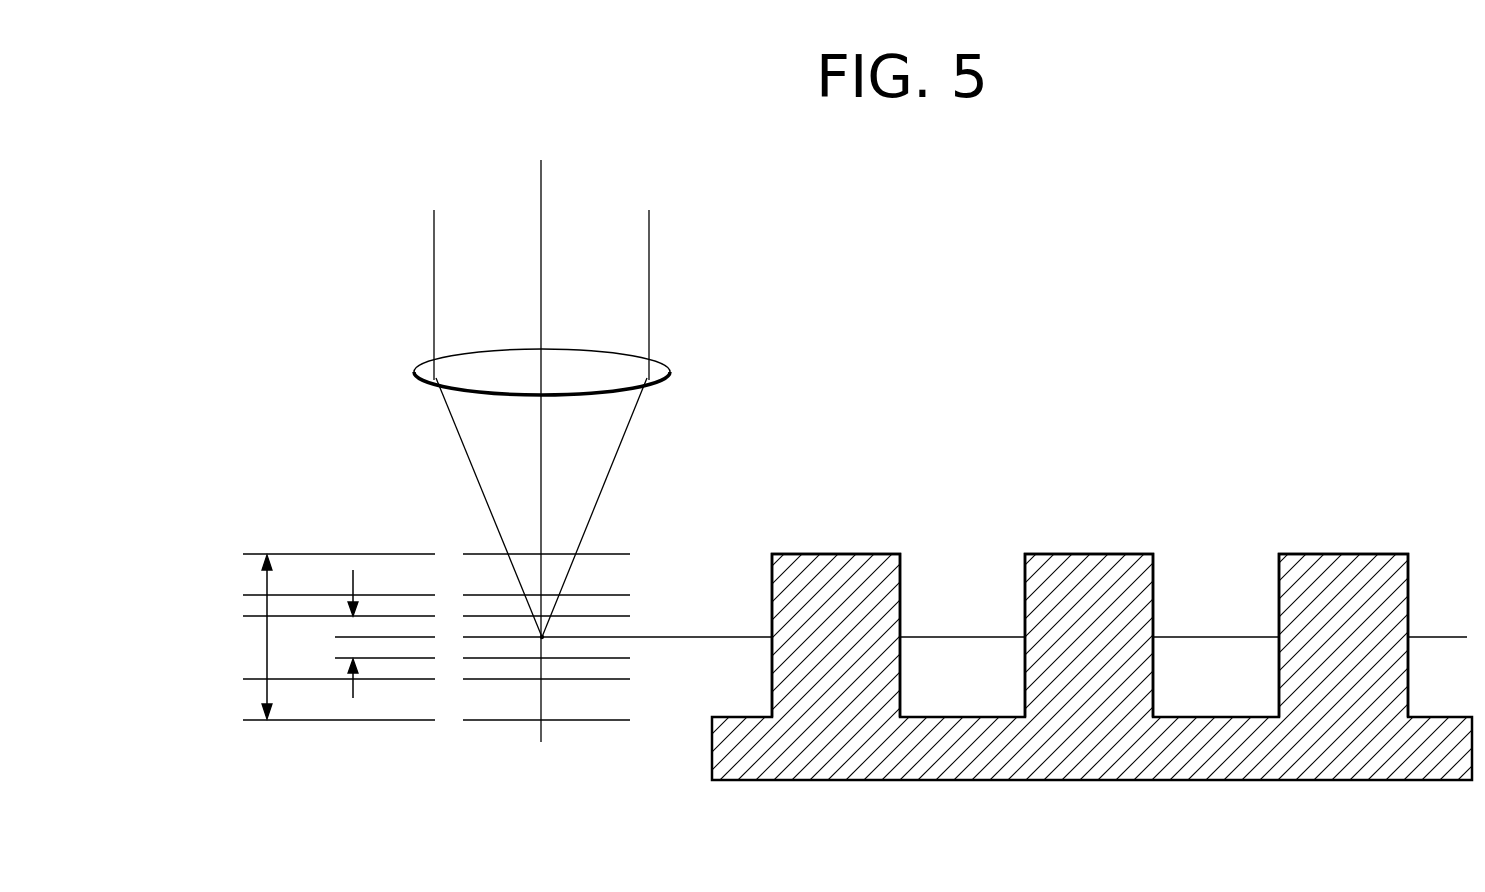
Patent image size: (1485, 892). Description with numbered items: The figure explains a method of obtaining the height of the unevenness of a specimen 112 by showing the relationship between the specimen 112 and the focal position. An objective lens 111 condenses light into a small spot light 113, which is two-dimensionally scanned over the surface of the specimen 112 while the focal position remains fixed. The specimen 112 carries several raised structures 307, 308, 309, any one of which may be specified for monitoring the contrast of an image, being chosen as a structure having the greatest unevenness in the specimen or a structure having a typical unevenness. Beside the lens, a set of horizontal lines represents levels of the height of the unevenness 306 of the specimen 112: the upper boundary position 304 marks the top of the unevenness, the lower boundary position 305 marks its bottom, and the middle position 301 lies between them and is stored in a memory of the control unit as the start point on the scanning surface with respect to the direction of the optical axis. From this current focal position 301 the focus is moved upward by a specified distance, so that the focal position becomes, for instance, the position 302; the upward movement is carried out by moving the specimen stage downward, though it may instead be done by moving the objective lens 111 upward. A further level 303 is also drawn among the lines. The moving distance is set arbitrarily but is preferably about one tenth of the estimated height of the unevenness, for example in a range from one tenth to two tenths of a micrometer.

The objective lens 111 is at (668, 371).
The specimen 112 is at (1087, 782).
The spot light 113 is at (541, 638).
The middle position 301 is at (336, 639).
The position 302 is at (398, 615).
The recording layer 303 is at (392, 660).
The upper boundary position 304 is at (290, 553).
The lower boundary position 305 is at (348, 721).
The unevenness 306 is at (267, 650).
The structure 307 is at (838, 553).
The structure 308 is at (1093, 553).
The structure 309 is at (1350, 553).